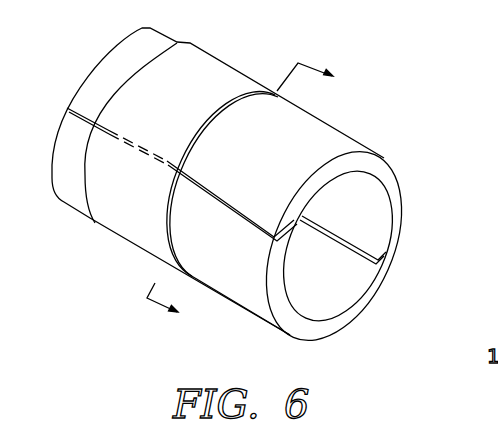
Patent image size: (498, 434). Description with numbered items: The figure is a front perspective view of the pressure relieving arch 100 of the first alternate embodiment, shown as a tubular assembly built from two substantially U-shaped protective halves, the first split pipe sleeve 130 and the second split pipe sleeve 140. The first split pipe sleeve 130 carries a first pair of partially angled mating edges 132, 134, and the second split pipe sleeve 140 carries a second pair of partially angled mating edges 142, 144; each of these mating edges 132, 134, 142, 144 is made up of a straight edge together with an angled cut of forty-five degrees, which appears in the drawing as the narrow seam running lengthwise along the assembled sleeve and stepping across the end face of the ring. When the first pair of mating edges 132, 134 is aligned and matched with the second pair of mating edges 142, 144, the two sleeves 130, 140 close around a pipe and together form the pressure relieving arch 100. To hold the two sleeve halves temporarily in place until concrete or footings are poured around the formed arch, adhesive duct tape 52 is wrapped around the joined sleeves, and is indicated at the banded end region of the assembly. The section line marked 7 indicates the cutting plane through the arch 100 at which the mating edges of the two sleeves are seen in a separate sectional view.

The pressure relieving arch 100 is at (248, 199).
The first split pipe sleeve 130 is at (333, 237).
The partially angled mating edge 132 is at (195, 202).
The partially angled mating edge 134 is at (348, 251).
The second split pipe sleeve 140 is at (231, 292).
The partially angled mating edge 142 is at (236, 204).
The partially angled mating edge 144 is at (327, 217).
The adhesive duct tape 52 is at (220, 80).
The section line 7- 7 is at (248, 196).